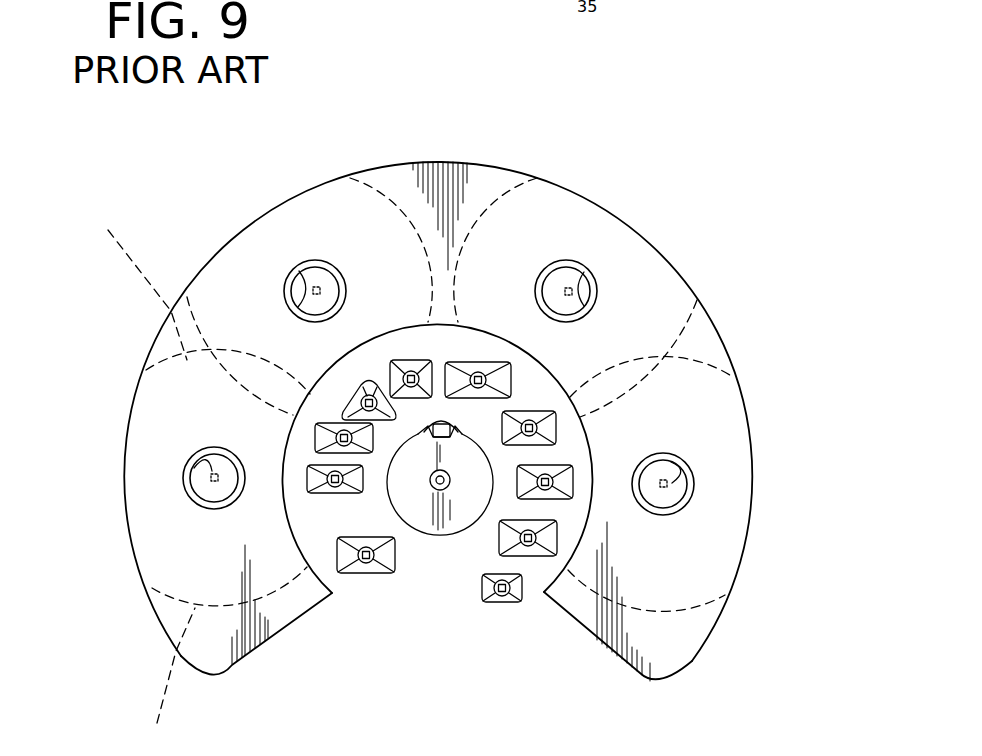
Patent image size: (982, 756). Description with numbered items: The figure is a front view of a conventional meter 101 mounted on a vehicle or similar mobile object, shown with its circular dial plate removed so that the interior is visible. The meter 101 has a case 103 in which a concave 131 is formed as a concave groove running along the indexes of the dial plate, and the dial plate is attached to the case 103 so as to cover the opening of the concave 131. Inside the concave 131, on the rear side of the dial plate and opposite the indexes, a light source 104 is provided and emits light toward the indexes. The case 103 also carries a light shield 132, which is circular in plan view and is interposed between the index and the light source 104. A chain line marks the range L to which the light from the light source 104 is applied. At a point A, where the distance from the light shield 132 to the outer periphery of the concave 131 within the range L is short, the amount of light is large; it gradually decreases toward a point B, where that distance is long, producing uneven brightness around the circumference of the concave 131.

The meter 101 is at (781, 172).
The case 103 is at (735, 372).
The light source 104 is at (317, 286).
The concave 131 is at (718, 336).
The light shield 132 is at (299, 290).
The point A is at (125, 478).
The point B is at (145, 370).
The range L is at (145, 479).